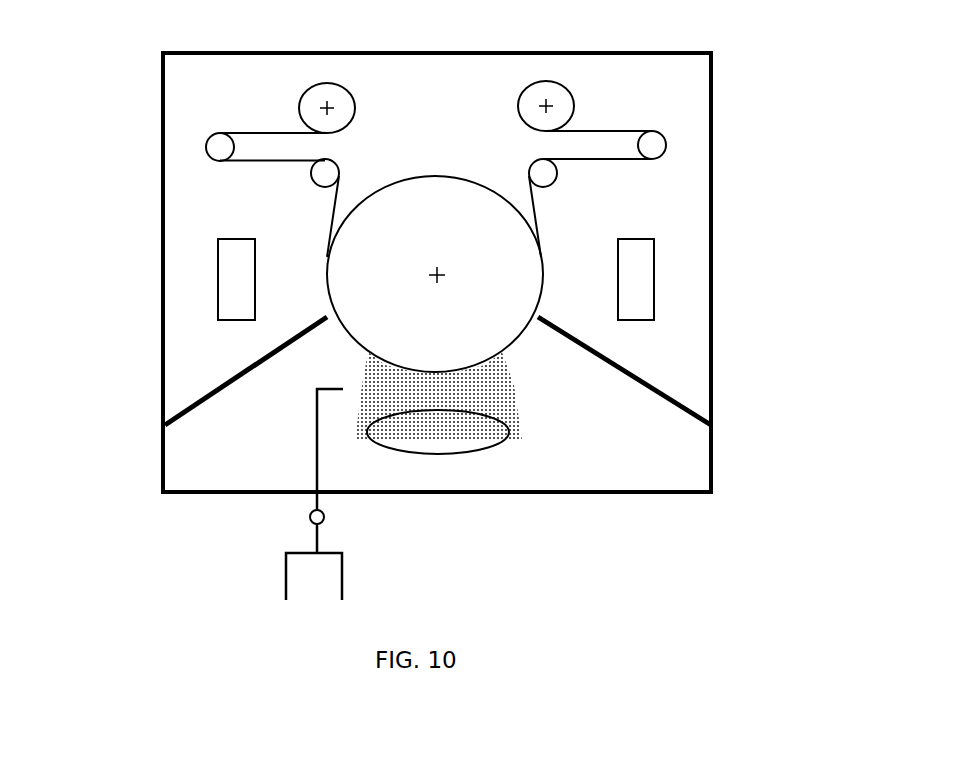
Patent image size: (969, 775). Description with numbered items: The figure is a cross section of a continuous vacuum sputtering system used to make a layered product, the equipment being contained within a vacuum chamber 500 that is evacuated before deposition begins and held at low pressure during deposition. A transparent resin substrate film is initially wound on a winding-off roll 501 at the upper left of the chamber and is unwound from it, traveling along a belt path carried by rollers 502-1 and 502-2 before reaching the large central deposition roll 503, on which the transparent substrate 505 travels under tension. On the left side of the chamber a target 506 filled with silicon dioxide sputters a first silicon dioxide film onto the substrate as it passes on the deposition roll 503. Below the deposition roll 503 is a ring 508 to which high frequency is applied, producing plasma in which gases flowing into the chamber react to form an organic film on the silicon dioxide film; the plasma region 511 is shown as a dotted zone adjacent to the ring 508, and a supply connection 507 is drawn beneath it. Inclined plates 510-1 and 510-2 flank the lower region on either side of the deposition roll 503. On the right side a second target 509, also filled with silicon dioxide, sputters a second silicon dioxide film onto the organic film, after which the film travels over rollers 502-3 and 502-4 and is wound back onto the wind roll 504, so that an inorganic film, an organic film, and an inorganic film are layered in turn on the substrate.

The vacuum chamber 500 is at (70, 41).
The winding-off roll 501 is at (322, 83).
The belt support roller 502-1 is at (208, 140).
The belt support roller 502-2 is at (311, 174).
The belt support roller 502-3 is at (557, 175).
The belt support roller 502-4 is at (667, 133).
The deposition roll 503 is at (510, 343).
The wind roll 504 is at (560, 87).
The transparent substrate 505 is at (250, 130).
The target 506 is at (218, 278).
The pressure roller unit 507 is at (313, 457).
The ring 508 is at (450, 448).
The target 509 is at (650, 275).
The guide plate 510-1 is at (197, 402).
The guide plate 510-2 is at (647, 392).
The toner 511 is at (458, 395).